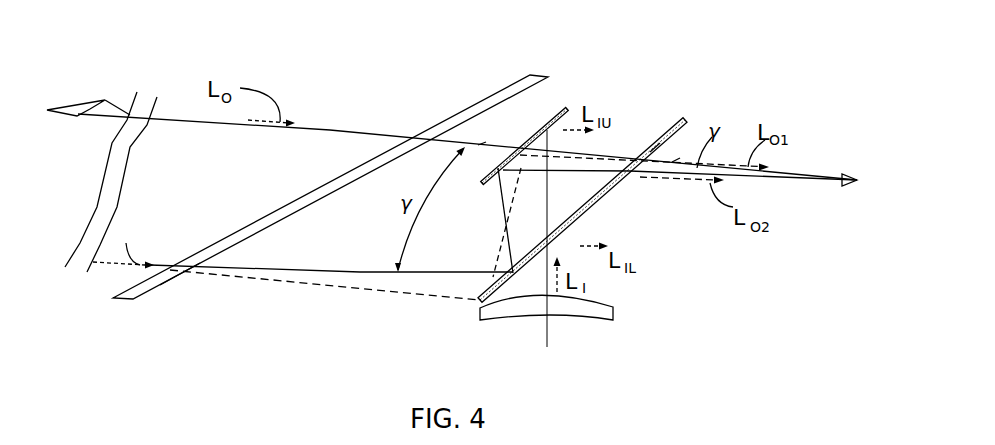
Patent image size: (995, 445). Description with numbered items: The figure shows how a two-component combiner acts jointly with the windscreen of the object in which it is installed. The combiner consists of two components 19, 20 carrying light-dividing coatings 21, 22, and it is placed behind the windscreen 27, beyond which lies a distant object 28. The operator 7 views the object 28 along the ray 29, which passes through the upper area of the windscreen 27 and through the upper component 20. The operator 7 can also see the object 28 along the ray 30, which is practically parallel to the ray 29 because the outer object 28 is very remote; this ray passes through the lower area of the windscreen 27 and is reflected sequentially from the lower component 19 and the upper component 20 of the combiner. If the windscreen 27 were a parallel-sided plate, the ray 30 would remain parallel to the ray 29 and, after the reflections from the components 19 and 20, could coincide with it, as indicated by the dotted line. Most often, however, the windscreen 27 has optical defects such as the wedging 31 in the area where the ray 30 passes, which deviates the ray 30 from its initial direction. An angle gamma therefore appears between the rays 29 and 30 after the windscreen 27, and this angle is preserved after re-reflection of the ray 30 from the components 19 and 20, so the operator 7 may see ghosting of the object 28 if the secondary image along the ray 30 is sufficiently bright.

The operator 7 is at (847, 177).
The lower component of combiner 19 is at (656, 147).
The upper component of combiner 20 is at (538, 122).
The light-dividing coating 21 is at (563, 232).
The light-dividing coating 22 is at (496, 184).
The windscreen 27 is at (303, 197).
The distant object 28 is at (83, 118).
The ray 29 is at (482, 143).
The ray 30 is at (123, 265).
The wedging 31 is at (180, 276).